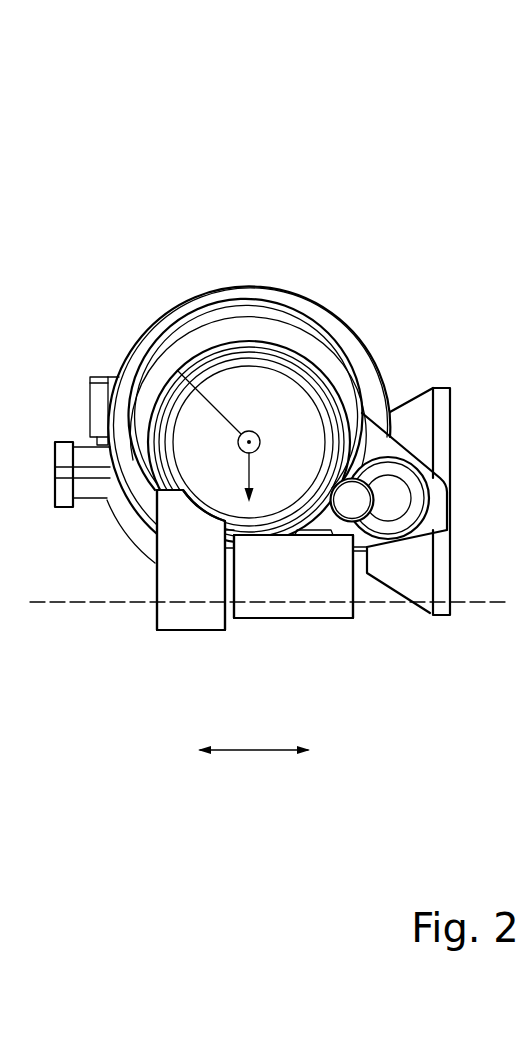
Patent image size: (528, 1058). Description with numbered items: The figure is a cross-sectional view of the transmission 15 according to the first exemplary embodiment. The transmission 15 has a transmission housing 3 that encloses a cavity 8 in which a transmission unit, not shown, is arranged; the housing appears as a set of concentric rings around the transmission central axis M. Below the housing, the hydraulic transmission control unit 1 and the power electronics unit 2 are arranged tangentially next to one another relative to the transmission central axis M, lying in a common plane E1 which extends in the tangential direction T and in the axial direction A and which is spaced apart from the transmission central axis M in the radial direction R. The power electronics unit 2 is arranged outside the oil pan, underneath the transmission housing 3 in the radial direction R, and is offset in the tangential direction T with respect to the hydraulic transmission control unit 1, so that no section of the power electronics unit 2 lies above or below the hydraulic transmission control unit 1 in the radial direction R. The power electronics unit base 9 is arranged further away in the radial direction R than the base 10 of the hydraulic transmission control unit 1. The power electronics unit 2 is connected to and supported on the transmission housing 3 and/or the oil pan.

The hydraulic transmission control unit 1 is at (320, 575).
The power electronics unit 2 is at (177, 613).
The transmission housing 3 is at (335, 347).
The cavity 8 is at (253, 403).
The power electronics unit base 9 is at (182, 632).
The base of the hydraulic transmission control unit 10 is at (313, 618).
The transmission 15 is at (431, 280).
The axial direction A is at (290, 380).
The transmission central axis M is at (240, 430).
The radial direction R is at (178, 371).
The tangential direction T is at (254, 729).
The plane E1 is at (63, 603).